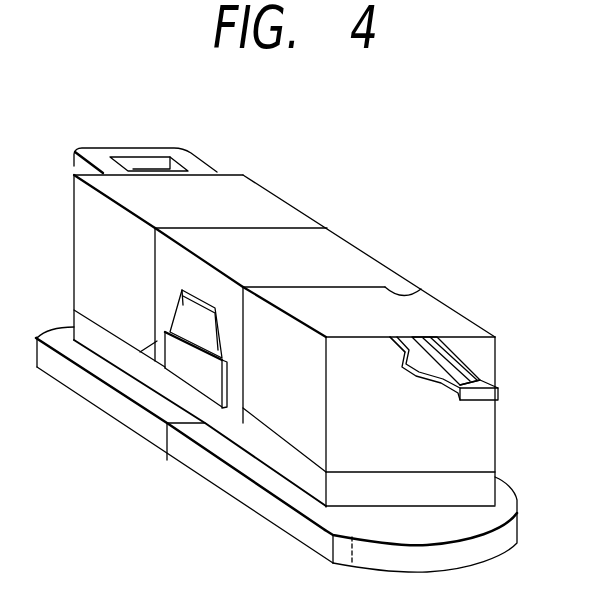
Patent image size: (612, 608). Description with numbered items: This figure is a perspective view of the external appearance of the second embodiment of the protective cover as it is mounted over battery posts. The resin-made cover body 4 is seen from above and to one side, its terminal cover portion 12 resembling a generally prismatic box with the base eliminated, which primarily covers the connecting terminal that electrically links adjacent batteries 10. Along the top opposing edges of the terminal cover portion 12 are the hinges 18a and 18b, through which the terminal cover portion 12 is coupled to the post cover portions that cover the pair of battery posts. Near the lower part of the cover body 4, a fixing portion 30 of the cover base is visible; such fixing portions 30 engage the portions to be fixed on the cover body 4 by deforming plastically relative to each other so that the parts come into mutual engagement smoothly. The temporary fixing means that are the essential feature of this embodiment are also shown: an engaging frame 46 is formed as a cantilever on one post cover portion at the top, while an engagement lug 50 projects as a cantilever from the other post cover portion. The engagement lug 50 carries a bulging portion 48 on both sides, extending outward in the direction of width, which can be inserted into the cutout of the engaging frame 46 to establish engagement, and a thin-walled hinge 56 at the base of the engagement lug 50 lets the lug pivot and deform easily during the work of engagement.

The cover body 4 is at (366, 238).
The batteries 10 is at (115, 377).
The terminal cover portion 12 is at (170, 268).
The hinge 18a is at (423, 292).
The hinge 18b is at (248, 228).
The fixing portions 30 is at (192, 340).
The engaging frame 46 is at (85, 148).
The bulging portion 48 is at (470, 363).
The engagement lug 50 is at (482, 402).
The thin-walled hinge 56 is at (390, 340).